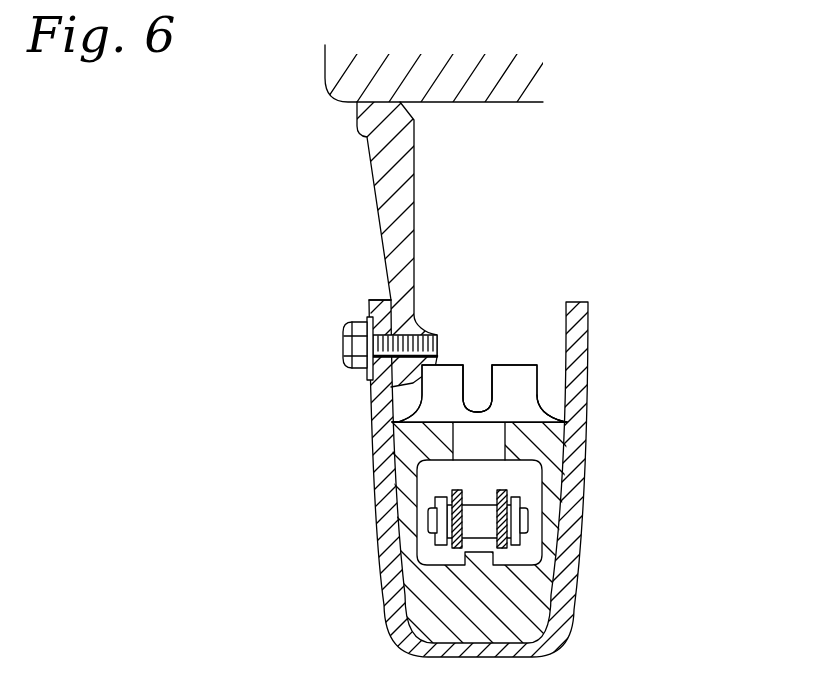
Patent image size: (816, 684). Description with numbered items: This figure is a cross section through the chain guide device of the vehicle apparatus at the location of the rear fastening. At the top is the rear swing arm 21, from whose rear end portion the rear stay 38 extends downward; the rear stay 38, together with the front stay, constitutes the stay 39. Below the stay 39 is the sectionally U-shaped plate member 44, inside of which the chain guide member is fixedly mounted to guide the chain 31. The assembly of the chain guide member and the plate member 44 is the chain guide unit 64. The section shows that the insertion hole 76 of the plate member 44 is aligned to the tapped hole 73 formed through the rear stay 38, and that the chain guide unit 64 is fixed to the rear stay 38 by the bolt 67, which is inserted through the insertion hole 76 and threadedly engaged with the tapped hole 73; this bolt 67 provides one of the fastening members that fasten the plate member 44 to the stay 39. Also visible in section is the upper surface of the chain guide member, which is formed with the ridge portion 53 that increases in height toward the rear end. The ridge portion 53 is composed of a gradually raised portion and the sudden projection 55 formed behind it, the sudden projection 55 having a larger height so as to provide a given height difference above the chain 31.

The rear swing arm 21 is at (484, 100).
The rear stay 38 is at (392, 185).
The stay 39 is at (422, 157).
The insertion hole 76 is at (386, 305).
The bolt 67 is at (352, 345).
The tapped hole 73 is at (440, 332).
The chain guide unit 64 is at (485, 348).
The ridge portion 53 is at (508, 366).
The sudden projection 55 is at (524, 370).
The plate member 44 is at (583, 323).
The chain 31 is at (532, 523).